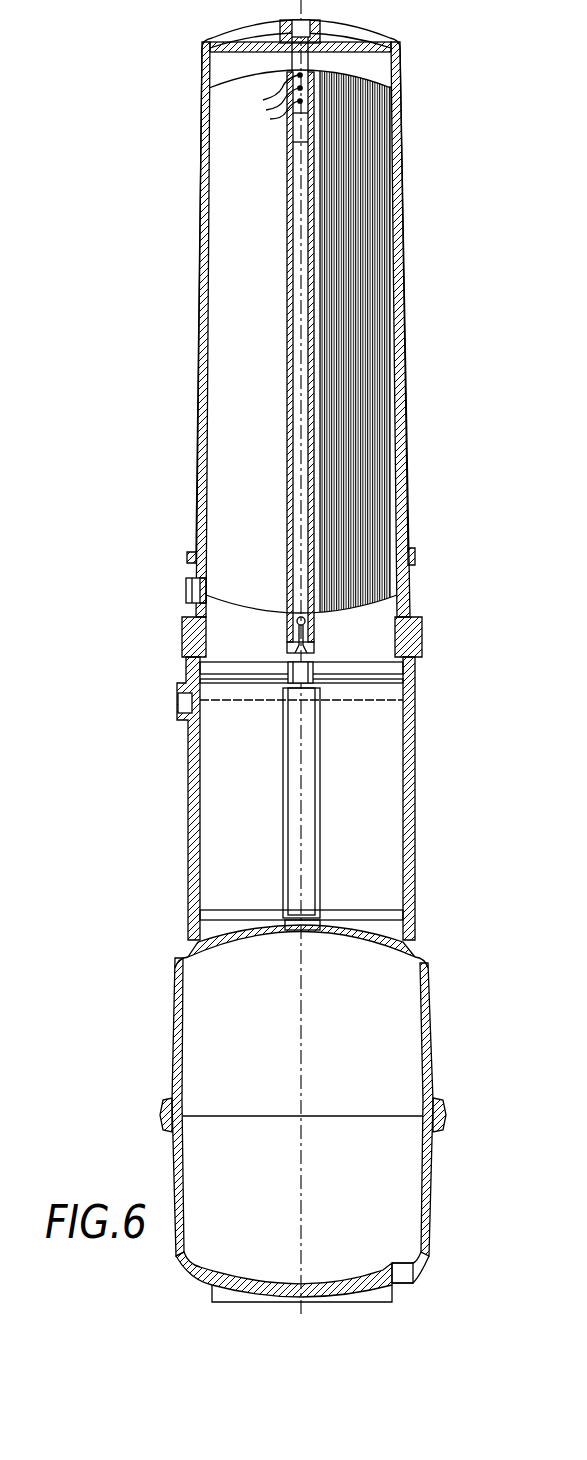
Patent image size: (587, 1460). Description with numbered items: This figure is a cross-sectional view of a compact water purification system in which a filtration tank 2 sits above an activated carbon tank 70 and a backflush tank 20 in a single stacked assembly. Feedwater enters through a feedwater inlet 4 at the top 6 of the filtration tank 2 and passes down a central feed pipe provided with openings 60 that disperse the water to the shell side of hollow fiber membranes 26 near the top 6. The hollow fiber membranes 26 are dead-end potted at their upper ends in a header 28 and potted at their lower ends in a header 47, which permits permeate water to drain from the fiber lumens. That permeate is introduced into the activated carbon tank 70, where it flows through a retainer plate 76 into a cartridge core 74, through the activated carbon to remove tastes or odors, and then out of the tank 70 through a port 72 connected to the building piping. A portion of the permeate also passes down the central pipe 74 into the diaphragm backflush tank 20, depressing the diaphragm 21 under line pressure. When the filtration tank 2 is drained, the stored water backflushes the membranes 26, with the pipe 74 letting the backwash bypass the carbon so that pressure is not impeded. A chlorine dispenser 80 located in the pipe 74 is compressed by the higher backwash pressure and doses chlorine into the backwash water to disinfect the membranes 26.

The filtration tank 2 is at (199, 200).
The feedwater inlet 4 is at (292, 18).
The top 6 is at (228, 46).
The header 28 is at (393, 44).
The openings 60 is at (270, 119).
The hollow fiber membranes 26 is at (385, 282).
The header 47 is at (303, 672).
The opening or port 72 is at (177, 712).
The retainer plate 76 is at (380, 701).
The activated carbon tank 70 is at (415, 783).
The chlorine dispenser 80 is at (313, 792).
The cartridge core or pipe 74 is at (320, 870).
The backflush tank 20 is at (430, 1035).
The diaphragm 21 is at (390, 1117).